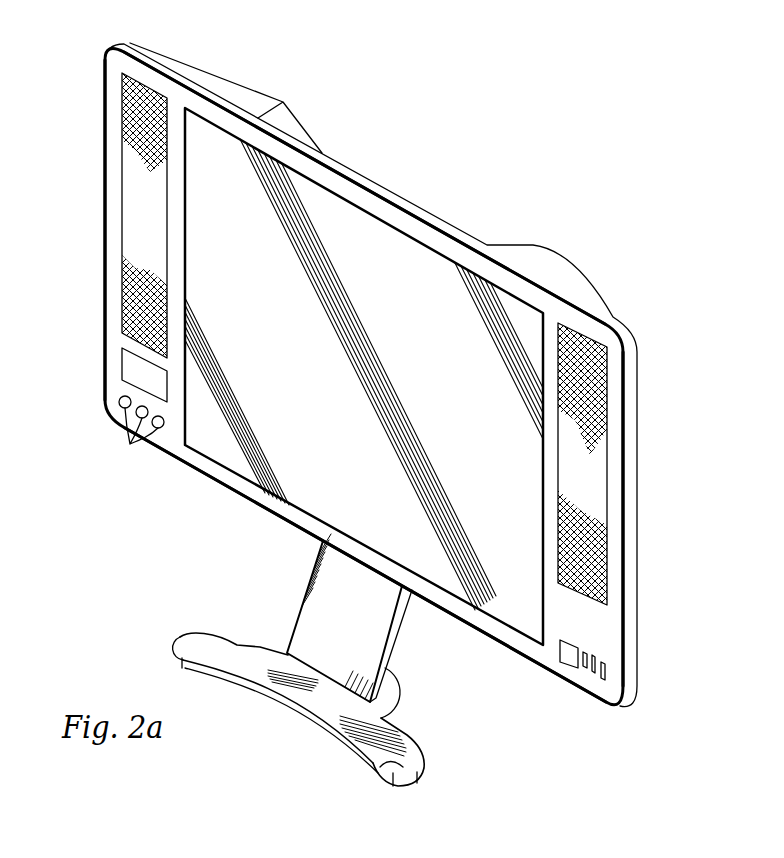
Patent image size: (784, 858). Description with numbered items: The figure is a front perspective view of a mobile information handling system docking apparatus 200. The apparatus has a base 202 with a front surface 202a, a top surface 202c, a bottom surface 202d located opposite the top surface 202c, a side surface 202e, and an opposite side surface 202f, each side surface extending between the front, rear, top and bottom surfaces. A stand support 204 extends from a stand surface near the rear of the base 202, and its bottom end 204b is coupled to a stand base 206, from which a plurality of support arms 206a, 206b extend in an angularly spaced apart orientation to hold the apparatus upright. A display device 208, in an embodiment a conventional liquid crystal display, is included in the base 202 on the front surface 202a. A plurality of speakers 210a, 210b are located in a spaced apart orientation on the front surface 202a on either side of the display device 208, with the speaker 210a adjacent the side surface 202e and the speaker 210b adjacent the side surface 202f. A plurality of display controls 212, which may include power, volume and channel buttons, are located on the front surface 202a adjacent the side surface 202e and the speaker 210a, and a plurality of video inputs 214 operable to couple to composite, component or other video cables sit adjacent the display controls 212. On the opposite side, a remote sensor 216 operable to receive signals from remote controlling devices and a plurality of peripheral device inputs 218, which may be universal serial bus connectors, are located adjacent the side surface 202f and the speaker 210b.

The mobile information handling system docking apparatus 200 is at (578, 190).
The base 202 is at (442, 212).
The front surface 202a is at (610, 632).
The top surface 202c is at (378, 153).
The bottom surface 202d is at (238, 494).
The side surface 202e is at (104, 214).
The side surface 202f is at (636, 560).
The stand support 204 is at (305, 600).
The bottom end 204b is at (333, 674).
The stand base 206 is at (292, 714).
The support arm 206a is at (372, 768).
The support arm 206b is at (183, 640).
The display device 208 is at (343, 405).
The speaker 210a is at (136, 170).
The speaker 210b is at (594, 486).
The display controls 212 is at (122, 360).
The video inputs 214 is at (130, 441).
The remote sensor 216 is at (570, 657).
The peripheral device inputs 218 is at (594, 678).